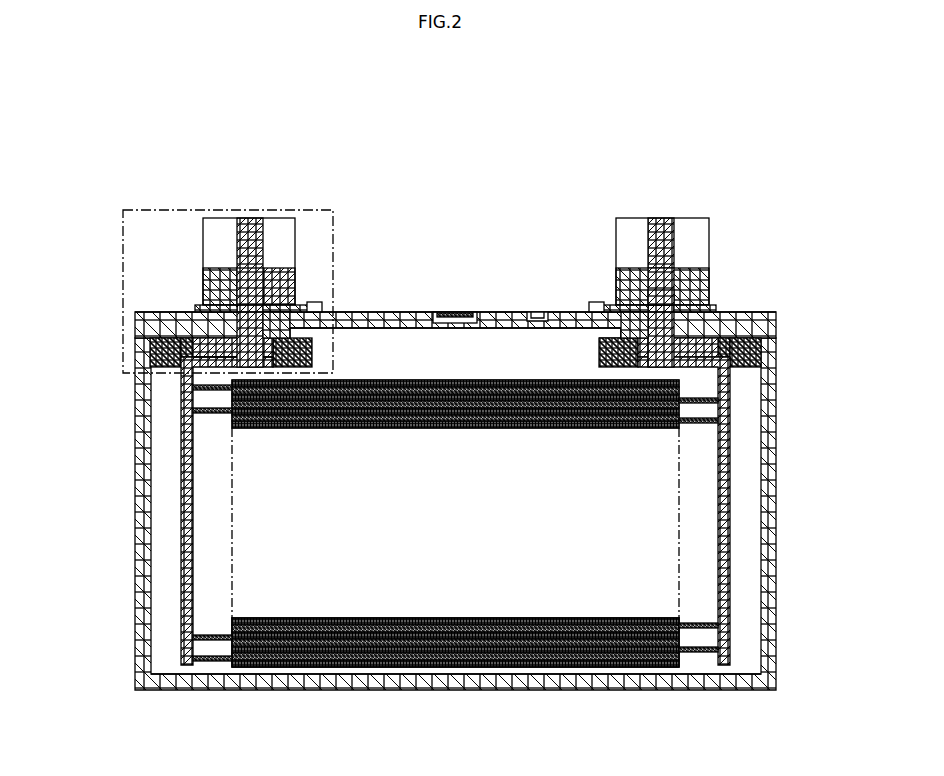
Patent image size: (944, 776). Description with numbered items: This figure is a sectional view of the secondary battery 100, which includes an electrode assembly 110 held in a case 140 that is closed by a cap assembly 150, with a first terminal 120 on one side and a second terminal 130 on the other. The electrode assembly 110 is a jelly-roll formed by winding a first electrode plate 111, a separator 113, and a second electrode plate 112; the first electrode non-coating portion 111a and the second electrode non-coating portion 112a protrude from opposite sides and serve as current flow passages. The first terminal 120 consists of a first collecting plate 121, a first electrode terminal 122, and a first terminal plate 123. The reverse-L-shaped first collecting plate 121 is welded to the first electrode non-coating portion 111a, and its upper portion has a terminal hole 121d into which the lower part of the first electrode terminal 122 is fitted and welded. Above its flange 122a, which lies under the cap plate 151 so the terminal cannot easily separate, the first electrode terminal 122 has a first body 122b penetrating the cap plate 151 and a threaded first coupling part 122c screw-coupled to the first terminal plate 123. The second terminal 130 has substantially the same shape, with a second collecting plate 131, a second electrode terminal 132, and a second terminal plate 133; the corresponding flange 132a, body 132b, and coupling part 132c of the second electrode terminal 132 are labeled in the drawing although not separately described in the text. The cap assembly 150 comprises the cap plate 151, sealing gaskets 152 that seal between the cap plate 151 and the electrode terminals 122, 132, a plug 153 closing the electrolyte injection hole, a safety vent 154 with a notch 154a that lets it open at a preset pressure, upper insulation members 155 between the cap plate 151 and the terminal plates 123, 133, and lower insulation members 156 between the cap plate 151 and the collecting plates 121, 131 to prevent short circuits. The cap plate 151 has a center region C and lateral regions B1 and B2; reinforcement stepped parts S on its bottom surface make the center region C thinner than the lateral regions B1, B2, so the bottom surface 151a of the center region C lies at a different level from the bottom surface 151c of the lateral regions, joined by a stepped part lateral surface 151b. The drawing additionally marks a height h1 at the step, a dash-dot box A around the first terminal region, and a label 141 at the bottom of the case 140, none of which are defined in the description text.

The secondary battery 100 is at (790, 110).
The electrode assembly 110 is at (540, 670).
The first electrode plate 111 is at (286, 667).
The first electrode non-coating portion 111a is at (213, 663).
The second electrode plate 112 is at (601, 668).
The second electrode non-coating portion 112a is at (700, 653).
The separator 113 is at (471, 667).
The first terminal 120 is at (222, 211).
The first collecting plate 121 is at (180, 490).
The terminal hole 121d is at (183, 364).
The first electrode terminal 122 is at (233, 291).
The flange 122a is at (182, 347).
The first body 122b is at (262, 285).
The first coupling part 122c is at (262, 218).
The first terminal plate 123 is at (200, 268).
The second terminal 130 is at (667, 212).
The second collecting plate 131 is at (732, 516).
The second electrode terminal 132 is at (682, 296).
The second rivet terminal flange 132a is at (740, 358).
The second rivet terminal upper portion 132b is at (652, 288).
The second rivet terminal column 132c is at (675, 250).
The second terminal plate 133 is at (713, 268).
The case 140 is at (768, 452).
The case bottom 141 is at (747, 684).
The cap assembly 150 is at (554, 222).
The cap plate 151 is at (391, 311).
The bottom surface of the center region 151a is at (520, 322).
The stepped part lateral surface 151b is at (600, 332).
The bottom surface of the lateral regions 151c is at (602, 356).
The sealing gasket 152 is at (230, 315).
The plug 153 is at (535, 310).
The safety vent 154 is at (476, 312).
The notch 154a is at (448, 311).
The upper insulation member 155 is at (304, 304).
The lower insulation member 156 is at (314, 362).
The reinforcement stepped part S is at (300, 322).
The height h1 is at (312, 338).
The region A is at (218, 211).
The lateral region B1 is at (293, 312).
The lateral region B2 is at (776, 312).
The center region C is at (618, 312).